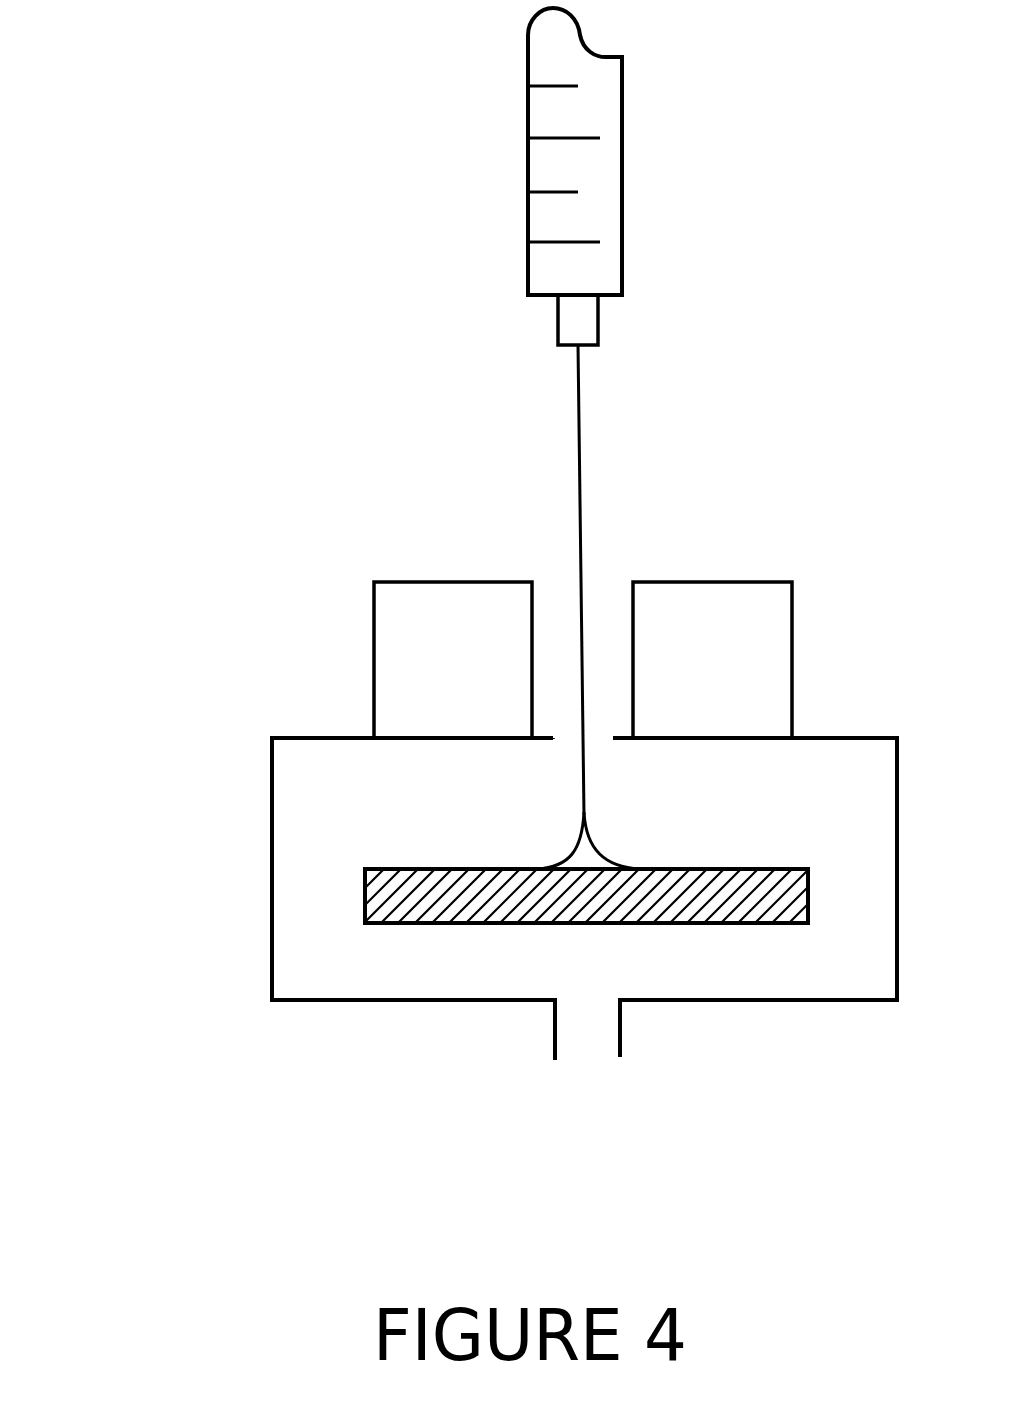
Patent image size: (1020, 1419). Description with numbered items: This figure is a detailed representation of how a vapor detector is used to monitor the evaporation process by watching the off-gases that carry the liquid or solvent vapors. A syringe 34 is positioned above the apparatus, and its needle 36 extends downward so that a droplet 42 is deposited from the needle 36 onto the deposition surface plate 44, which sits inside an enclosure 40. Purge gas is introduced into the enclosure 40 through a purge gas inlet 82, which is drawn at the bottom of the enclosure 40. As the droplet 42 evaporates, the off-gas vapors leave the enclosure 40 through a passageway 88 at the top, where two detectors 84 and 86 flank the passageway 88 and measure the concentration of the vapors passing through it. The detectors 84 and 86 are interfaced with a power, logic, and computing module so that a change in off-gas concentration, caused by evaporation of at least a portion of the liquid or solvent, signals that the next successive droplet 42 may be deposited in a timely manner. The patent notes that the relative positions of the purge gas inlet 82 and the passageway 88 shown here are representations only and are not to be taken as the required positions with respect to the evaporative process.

The syringe 34 is at (528, 165).
The needle 36 is at (578, 465).
The enclosure 40 is at (270, 738).
The droplet 42 is at (568, 848).
The deposition surface plate 44 is at (362, 883).
The purge gas inlet 82 is at (553, 1063).
The detector 84 is at (372, 582).
The detector 86 is at (793, 583).
The passageway 88 is at (549, 578).